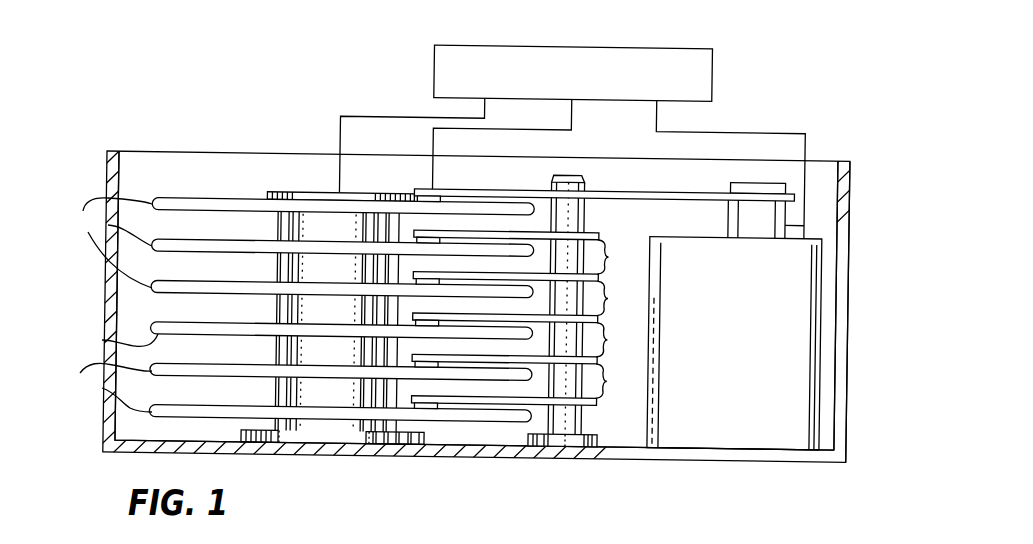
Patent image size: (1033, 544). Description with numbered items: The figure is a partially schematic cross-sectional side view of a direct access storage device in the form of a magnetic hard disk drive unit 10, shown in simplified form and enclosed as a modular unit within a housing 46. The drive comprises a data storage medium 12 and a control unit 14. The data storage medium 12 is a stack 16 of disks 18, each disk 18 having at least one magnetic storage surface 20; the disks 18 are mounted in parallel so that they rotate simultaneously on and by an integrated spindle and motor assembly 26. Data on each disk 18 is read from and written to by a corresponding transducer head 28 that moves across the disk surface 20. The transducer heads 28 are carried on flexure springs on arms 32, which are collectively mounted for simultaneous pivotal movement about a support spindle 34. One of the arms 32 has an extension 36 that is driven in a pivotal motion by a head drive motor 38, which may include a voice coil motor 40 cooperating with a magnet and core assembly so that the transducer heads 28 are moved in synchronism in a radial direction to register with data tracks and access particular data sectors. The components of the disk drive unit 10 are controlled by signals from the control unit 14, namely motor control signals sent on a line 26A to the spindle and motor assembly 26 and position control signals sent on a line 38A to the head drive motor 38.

The magnetic hard disk drive unit 10 is at (809, 81).
The data storage medium 12 is at (290, 122).
The control unit 14 is at (713, 68).
The stack 16 is at (237, 183).
The disks 18 is at (108, 225).
The magnetic storage surface 20 is at (165, 198).
The integrated spindle and motor assembly 26 is at (323, 400).
The line 26A is at (391, 114).
The transducer head 28 is at (421, 194).
The arms 32 is at (603, 258).
The support spindle 34 is at (580, 415).
The extension 36 is at (650, 190).
The head drive motor 38 is at (753, 436).
The line 38A is at (733, 125).
The voice coil motor 40 is at (808, 224).
The housing 46 is at (849, 372).